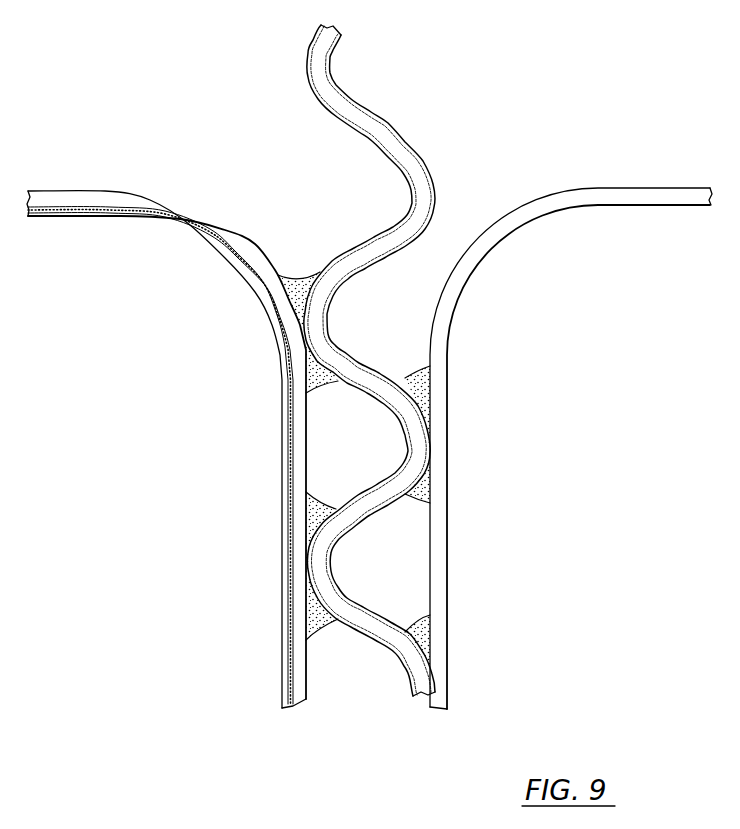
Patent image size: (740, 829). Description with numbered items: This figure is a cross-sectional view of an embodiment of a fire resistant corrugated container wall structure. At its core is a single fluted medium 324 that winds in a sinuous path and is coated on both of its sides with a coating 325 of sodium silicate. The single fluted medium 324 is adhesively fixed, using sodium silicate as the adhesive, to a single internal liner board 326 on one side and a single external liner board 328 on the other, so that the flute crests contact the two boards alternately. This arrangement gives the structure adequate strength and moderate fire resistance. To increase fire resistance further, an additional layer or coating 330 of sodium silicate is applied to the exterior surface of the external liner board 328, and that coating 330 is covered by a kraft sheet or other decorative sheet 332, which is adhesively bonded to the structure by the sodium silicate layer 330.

The single fluted medium 324 is at (347, 108).
The coating of sodium silicate 325 is at (407, 128).
The internal liner board 326 is at (440, 564).
The external liner board 328 is at (298, 668).
The additional layer or coating of sodium silicate 330 is at (290, 706).
The kraft sheet or other decorative sheet 332 is at (282, 627).